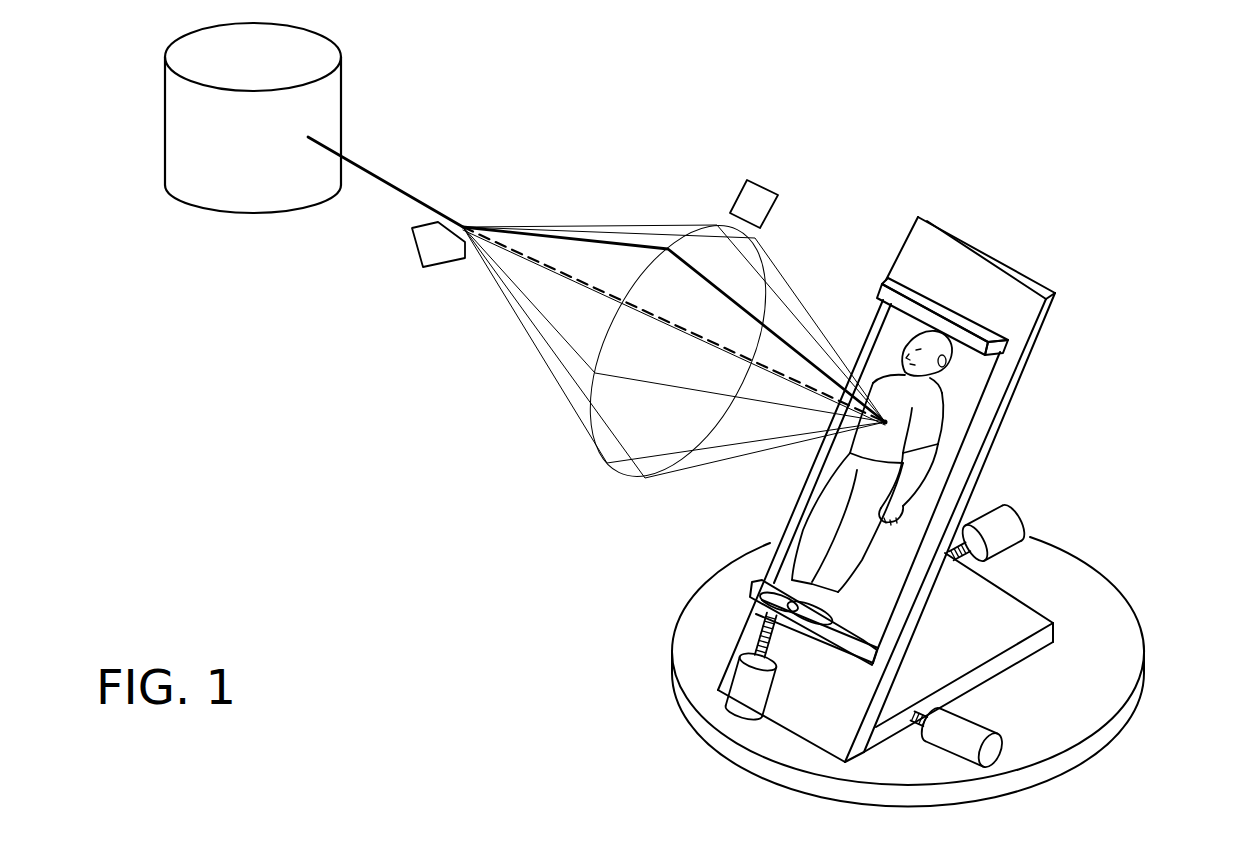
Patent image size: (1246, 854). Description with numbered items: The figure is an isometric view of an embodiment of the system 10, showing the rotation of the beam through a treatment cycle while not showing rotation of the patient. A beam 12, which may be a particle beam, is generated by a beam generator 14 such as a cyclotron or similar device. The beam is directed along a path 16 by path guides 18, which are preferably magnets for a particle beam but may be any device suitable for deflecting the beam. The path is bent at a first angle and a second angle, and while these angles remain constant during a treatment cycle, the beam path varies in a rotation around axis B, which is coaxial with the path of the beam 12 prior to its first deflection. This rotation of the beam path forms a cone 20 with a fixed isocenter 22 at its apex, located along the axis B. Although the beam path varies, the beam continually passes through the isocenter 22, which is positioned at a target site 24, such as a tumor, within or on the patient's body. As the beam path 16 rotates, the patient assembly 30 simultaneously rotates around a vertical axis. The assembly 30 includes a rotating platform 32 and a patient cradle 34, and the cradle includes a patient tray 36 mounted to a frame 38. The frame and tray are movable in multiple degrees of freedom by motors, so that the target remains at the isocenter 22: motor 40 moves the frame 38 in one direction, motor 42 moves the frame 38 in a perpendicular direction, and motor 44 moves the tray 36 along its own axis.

The system 10 is at (712, 160).
The beam 12 is at (381, 174).
The beam generator 14 is at (255, 182).
The path 16 is at (592, 240).
The path guides 18 is at (425, 258).
The cone 20 is at (620, 474).
The isocenter 22 is at (885, 422).
The target site 24 is at (886, 422).
The patient assembly 30 is at (1160, 698).
The rotating platform 32 is at (1063, 608).
The patient cradle 34 is at (939, 644).
The patient tray 36 is at (884, 291).
The frame 38 is at (1040, 315).
The motor 40 is at (949, 744).
The motor 42 is at (987, 544).
The motor 44 is at (735, 698).
The axis B is at (568, 275).